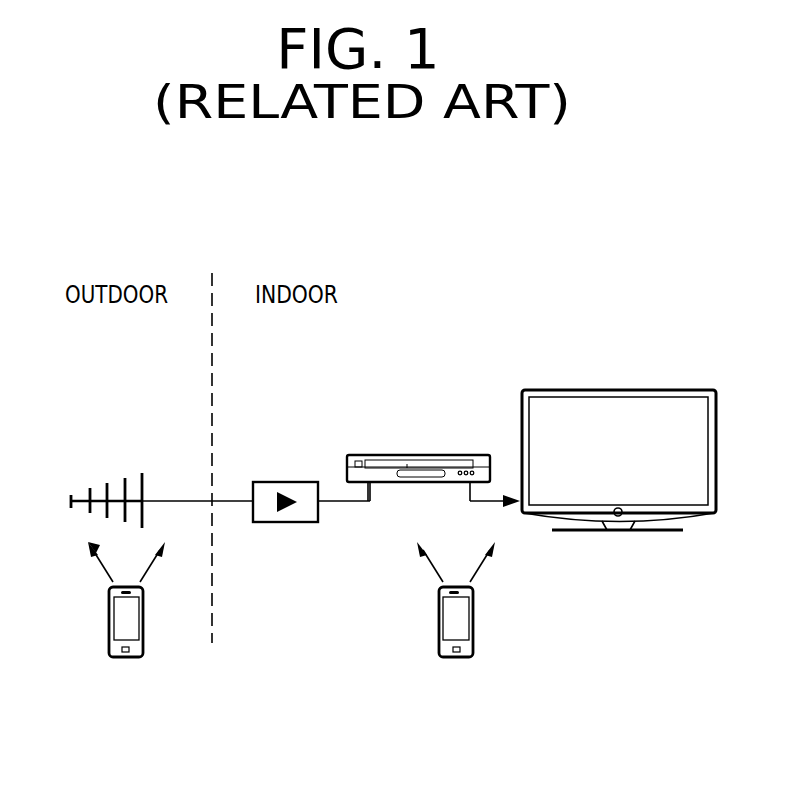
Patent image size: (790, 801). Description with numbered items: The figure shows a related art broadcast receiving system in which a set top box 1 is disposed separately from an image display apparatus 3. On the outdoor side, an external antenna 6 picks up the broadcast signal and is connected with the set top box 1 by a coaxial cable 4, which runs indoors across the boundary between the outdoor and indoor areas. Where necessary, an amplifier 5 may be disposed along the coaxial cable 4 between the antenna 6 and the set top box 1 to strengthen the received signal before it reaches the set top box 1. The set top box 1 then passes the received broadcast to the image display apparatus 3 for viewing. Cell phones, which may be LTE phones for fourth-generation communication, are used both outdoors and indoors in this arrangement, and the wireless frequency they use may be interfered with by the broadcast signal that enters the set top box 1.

The set top box 1 is at (397, 455).
The image display apparatus 3 is at (617, 390).
The coaxial cable 4 is at (233, 502).
The amplifier 5 is at (298, 522).
The external antenna 6 is at (123, 488).